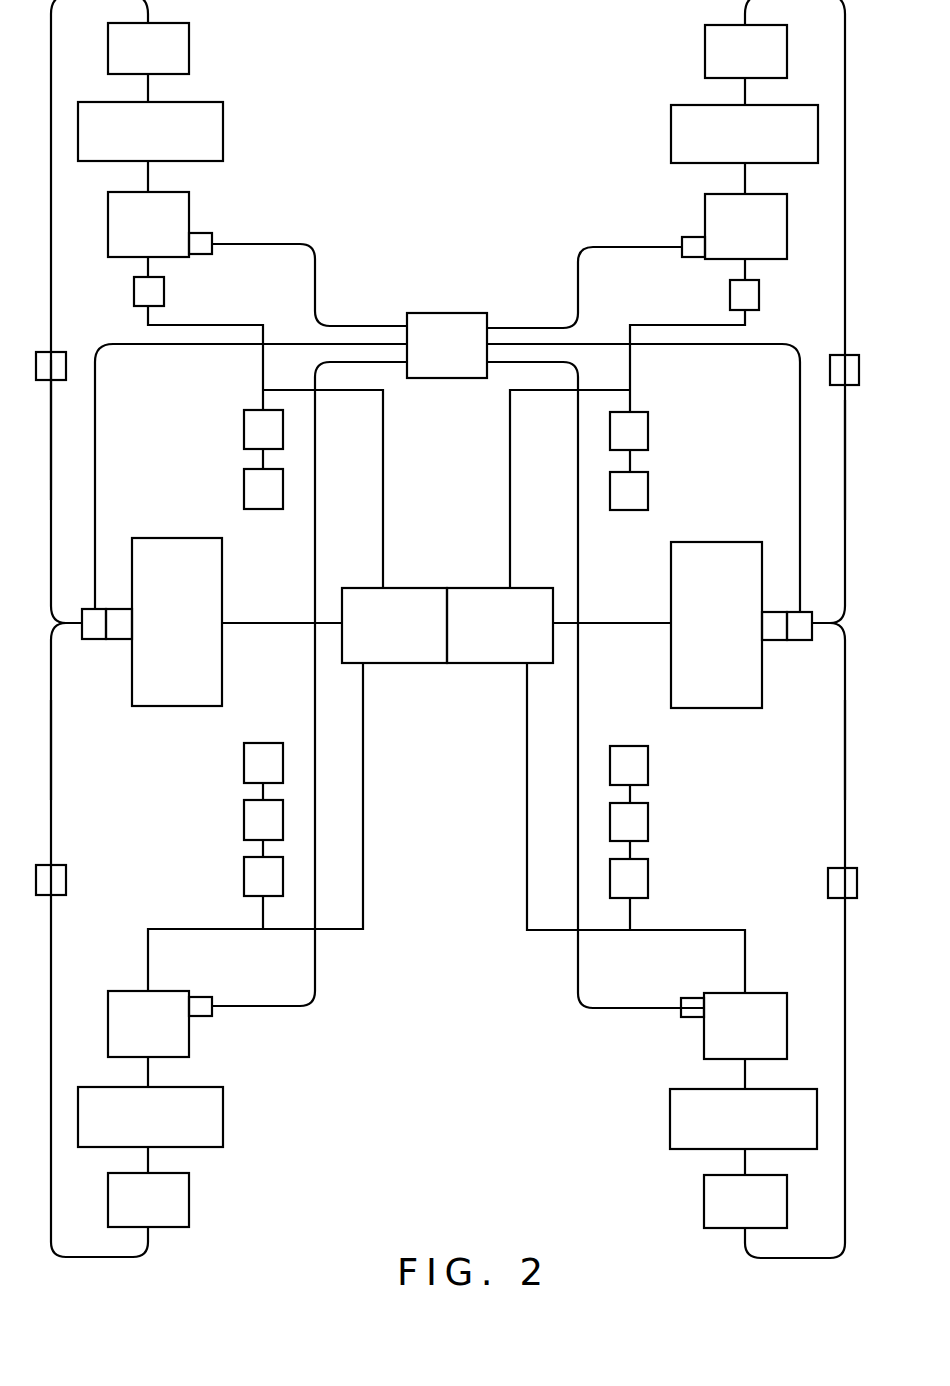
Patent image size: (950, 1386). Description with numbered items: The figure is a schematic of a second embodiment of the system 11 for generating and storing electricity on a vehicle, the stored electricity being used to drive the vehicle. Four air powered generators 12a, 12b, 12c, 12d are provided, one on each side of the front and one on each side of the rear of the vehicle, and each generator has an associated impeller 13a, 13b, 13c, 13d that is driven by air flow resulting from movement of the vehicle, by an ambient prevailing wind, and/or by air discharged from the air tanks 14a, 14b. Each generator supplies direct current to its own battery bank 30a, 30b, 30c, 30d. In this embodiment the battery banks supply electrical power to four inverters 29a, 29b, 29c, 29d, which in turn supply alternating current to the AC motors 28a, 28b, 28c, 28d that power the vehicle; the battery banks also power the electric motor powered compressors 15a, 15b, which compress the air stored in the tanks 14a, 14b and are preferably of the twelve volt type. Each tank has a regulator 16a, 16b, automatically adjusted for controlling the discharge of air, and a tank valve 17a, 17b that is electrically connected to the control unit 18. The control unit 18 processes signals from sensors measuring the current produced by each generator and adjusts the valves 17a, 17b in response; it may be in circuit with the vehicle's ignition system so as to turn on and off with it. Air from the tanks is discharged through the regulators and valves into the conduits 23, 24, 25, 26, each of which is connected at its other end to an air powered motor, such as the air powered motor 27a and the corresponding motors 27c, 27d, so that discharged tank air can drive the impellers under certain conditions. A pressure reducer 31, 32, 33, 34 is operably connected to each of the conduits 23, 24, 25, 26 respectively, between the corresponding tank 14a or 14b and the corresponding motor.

The system for generating and storing electricity 11 is at (447, 1004).
The air powered generator 12a is at (160, 224).
The air powered generator 12b is at (734, 226).
The air powered generator 12c is at (160, 1024).
The air powered generator 12d is at (734, 1026).
The impeller 13a is at (150, 131).
The impeller 13b is at (744, 134).
The impeller 13c is at (150, 1117).
The impeller 13d is at (743, 1119).
The air tank 14a is at (173, 706).
The air tank 14b is at (718, 709).
The electric motor powered compressor 15a is at (398, 588).
The electric motor powered compressor 15b is at (500, 588).
The regulator 16a is at (112, 609).
The regulator 16b is at (783, 612).
The tank valve 17a is at (97, 609).
The tank valve 17b is at (797, 612).
The control unit 18 is at (447, 345).
The conduit 23 is at (51, 500).
The conduit 24 is at (51, 744).
The conduit 25 is at (844, 507).
The conduit 26 is at (843, 747).
The air powered motor 27a is at (148, 48).
The wheel 27c is at (447, 626).
The wheel 27d is at (745, 1201).
The AC motor 28a is at (263, 489).
The AC motor 28b is at (629, 491).
The AC motor 28c is at (263, 763).
The AC motor 28d is at (629, 765).
The inverter 29a is at (263, 429).
The inverter 29b is at (629, 431).
The inverter 29c is at (263, 820).
The inverter 29d is at (629, 822).
The battery bank 30a is at (165, 291).
The battery bank 30b is at (730, 294).
The battery bank 30c is at (263, 876).
The battery bank 30d is at (629, 878).
The pressure reducer 31 is at (62, 352).
The pressure reducer 32 is at (66, 883).
The pressure reducer 33 is at (833, 353).
The pressure reducer 34 is at (828, 888).